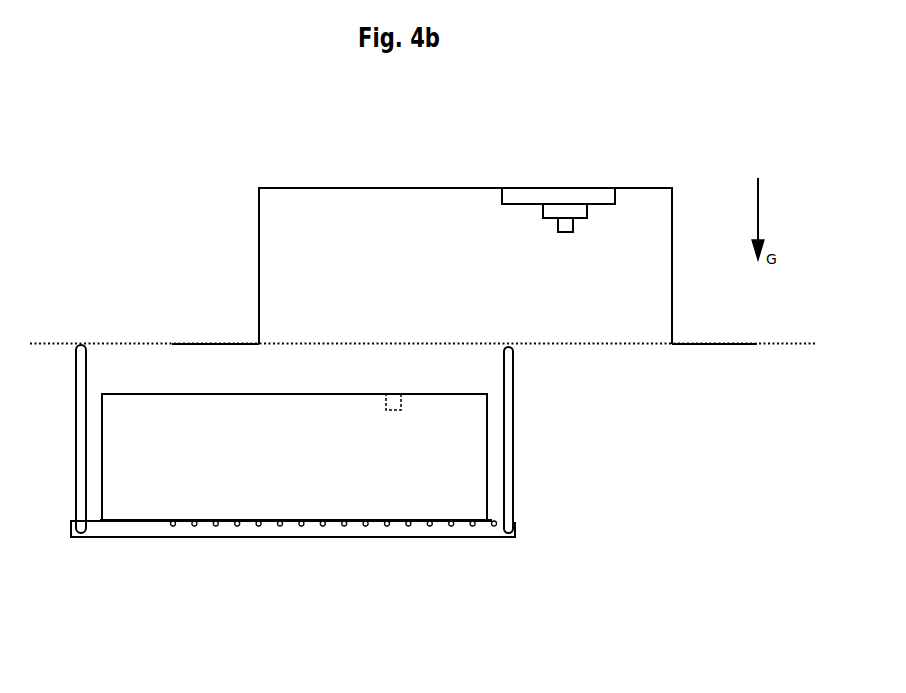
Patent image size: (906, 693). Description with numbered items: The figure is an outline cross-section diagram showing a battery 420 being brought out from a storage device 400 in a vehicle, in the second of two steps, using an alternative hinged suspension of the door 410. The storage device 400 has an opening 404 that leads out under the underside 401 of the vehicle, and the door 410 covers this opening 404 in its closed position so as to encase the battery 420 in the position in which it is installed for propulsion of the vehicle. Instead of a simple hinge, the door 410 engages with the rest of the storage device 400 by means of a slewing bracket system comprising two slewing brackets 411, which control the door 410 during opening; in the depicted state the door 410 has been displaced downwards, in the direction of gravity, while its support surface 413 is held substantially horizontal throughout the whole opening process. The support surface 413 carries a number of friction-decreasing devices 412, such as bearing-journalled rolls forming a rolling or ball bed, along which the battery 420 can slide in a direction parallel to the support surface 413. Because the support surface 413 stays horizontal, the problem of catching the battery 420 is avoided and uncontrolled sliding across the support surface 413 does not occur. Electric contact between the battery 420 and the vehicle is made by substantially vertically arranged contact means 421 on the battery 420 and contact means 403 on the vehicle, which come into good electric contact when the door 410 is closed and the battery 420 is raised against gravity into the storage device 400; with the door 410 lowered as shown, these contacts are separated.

The storage device 400 is at (317, 187).
The underside of the vehicle 401 is at (727, 347).
The contact means on the vehicle 403 is at (530, 197).
The opening 404 is at (628, 347).
The door 410 is at (100, 538).
The slewing brackets 411 is at (86, 378).
The friction-decreasing devices 412 is at (237, 527).
The support surface 413 is at (443, 522).
The battery 420 is at (385, 215).
The contact means on the battery 421 is at (386, 408).